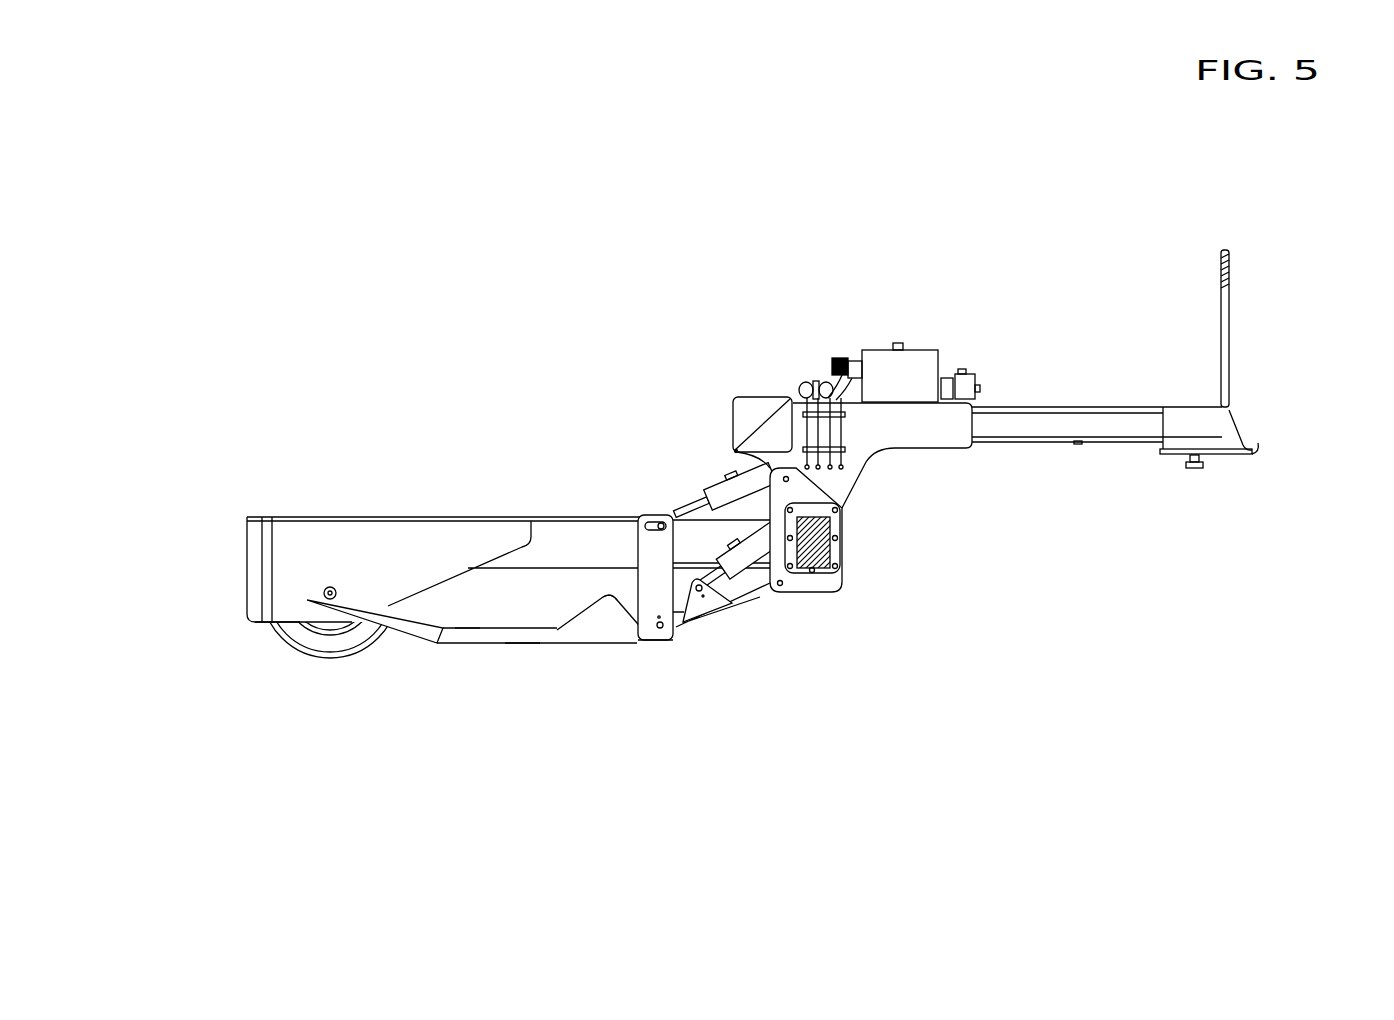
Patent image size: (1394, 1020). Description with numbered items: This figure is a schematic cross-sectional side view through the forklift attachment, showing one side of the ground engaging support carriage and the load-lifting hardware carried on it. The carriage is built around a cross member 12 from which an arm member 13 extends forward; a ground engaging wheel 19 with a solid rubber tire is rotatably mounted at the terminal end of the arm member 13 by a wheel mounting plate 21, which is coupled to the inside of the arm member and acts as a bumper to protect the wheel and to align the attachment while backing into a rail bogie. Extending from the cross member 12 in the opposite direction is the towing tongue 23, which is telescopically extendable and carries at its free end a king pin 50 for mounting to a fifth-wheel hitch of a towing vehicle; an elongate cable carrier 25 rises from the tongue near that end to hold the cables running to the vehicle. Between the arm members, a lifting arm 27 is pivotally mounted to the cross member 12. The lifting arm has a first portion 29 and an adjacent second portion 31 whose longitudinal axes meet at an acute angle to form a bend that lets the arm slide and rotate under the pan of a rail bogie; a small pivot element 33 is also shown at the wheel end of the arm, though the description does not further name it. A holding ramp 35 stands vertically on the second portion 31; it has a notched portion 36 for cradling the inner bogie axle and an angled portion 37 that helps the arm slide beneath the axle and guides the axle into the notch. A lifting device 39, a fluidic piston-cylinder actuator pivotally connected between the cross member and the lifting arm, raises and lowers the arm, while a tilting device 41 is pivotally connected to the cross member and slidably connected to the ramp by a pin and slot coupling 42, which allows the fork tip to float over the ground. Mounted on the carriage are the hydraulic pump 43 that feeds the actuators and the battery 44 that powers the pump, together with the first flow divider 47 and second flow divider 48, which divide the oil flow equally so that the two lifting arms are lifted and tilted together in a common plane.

The cross member 12 is at (838, 540).
The arm member 13 is at (590, 533).
The ground engaging wheel 19 is at (311, 648).
The wheel mounting plate 21 is at (247, 578).
The towing tongue 23 is at (1057, 425).
The cable carrier 25 is at (1229, 327).
The lifting arm 27 is at (520, 635).
The first portion of lifting arm 29 is at (418, 632).
The second portion of lifting arm 31 is at (467, 633).
The pivot pin 33 is at (342, 594).
The holding ramp 35 is at (657, 639).
The notched portion 36 is at (620, 603).
The angled portion 37 is at (588, 632).
The lifting device 39 is at (733, 578).
The tilting device 41 is at (718, 497).
The pin and slot coupling 42 is at (657, 527).
The hydraulic pump 43 is at (921, 347).
The battery 44 is at (773, 393).
The first flow divider 47 is at (806, 380).
The second flow divider 48 is at (823, 377).
The king pin 50 is at (1195, 471).